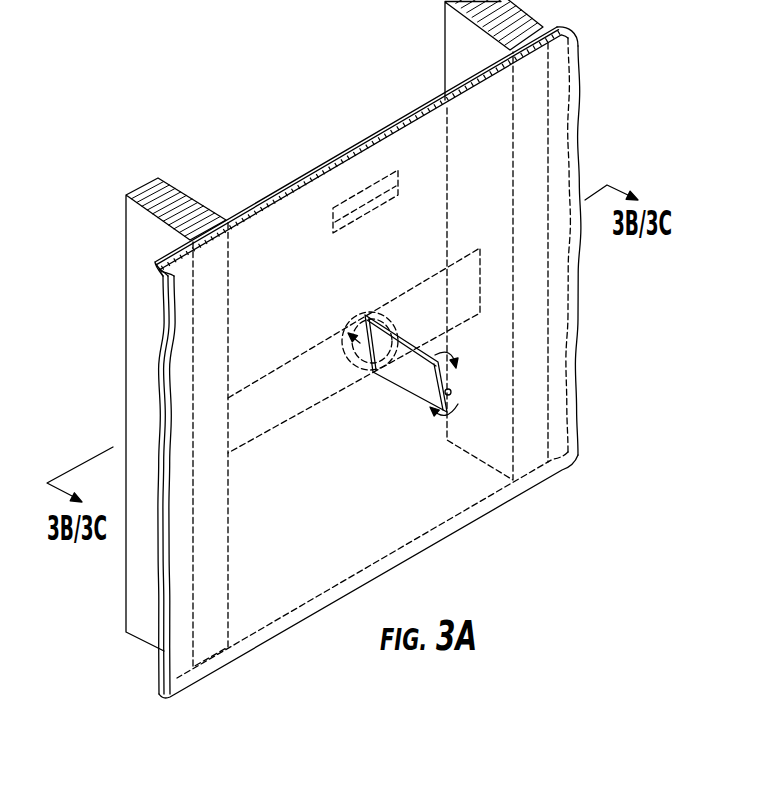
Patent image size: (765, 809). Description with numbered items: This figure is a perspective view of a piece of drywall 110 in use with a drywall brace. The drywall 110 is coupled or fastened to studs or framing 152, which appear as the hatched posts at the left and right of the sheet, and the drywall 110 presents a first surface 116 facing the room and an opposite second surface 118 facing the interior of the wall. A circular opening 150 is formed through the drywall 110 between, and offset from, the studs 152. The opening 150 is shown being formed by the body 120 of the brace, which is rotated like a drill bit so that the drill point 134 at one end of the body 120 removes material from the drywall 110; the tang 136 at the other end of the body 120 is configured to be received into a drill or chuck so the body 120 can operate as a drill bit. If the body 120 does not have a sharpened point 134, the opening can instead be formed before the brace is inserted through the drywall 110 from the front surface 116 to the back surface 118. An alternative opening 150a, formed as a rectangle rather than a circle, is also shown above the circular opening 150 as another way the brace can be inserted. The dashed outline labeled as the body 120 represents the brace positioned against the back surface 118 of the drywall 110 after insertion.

The drywall 110 is at (347, 153).
The first surface 116 is at (285, 581).
The second surface 118 is at (224, 192).
The body 120 is at (403, 378).
The drill point 134 is at (371, 353).
The tang 136 is at (452, 393).
The opening 150 is at (390, 305).
The alternative opening 150a is at (375, 183).
The studs 152 is at (153, 187).